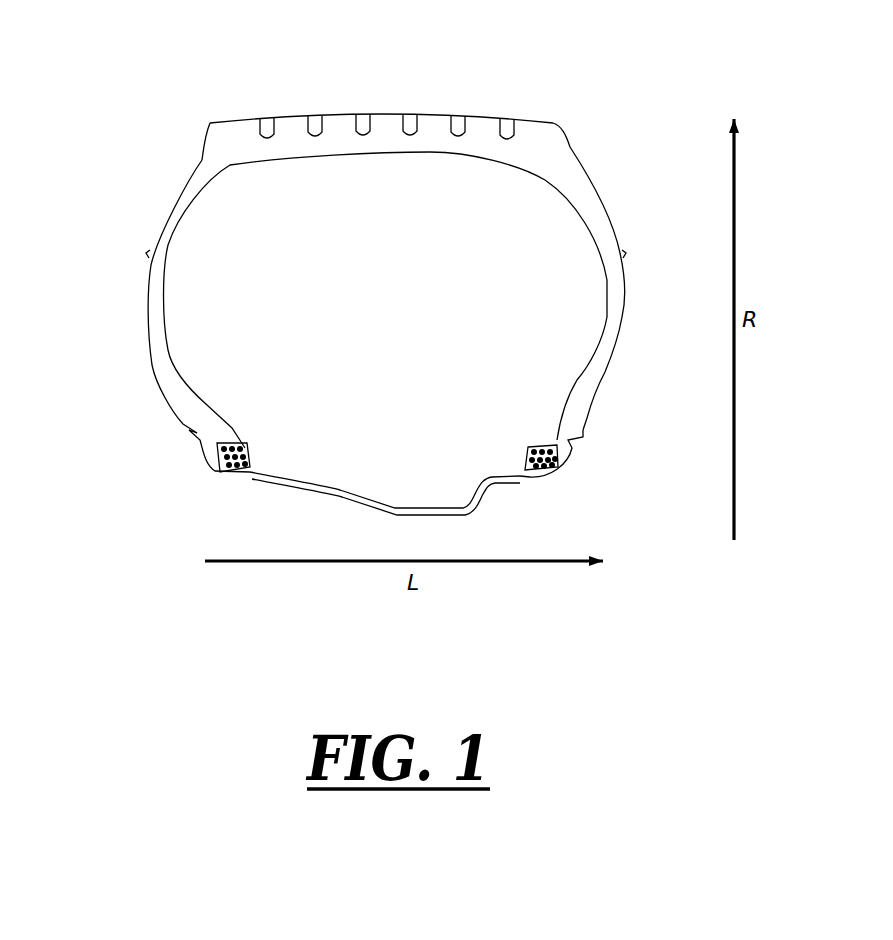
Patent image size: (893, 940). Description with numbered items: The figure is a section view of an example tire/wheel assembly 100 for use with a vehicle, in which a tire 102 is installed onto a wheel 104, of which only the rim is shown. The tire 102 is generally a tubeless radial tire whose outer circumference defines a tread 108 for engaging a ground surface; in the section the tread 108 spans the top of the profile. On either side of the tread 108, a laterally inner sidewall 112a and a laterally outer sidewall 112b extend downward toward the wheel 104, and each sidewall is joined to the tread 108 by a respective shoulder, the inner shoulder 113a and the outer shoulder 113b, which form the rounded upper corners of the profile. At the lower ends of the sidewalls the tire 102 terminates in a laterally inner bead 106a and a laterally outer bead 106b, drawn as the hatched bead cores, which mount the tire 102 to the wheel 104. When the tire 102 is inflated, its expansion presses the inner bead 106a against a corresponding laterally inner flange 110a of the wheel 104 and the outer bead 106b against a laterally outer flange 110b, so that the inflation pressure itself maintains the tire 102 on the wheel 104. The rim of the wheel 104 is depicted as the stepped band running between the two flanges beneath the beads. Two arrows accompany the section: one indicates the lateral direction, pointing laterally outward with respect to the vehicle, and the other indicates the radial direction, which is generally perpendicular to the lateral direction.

The tire/wheel assembly 100 is at (382, 274).
The tire 102 is at (192, 180).
The wheel 104 is at (259, 479).
The laterally inner bead 106a is at (234, 434).
The laterally outer bead 106b is at (552, 440).
The tread 108 is at (338, 86).
The laterally inner flange 110a is at (198, 437).
The laterally outer flange 110b is at (567, 438).
The laterally inner sidewall 112a is at (146, 347).
The laterally outer sidewall 112b is at (632, 257).
The inner shoulder 113a is at (200, 142).
The outer shoulder 113b is at (570, 142).